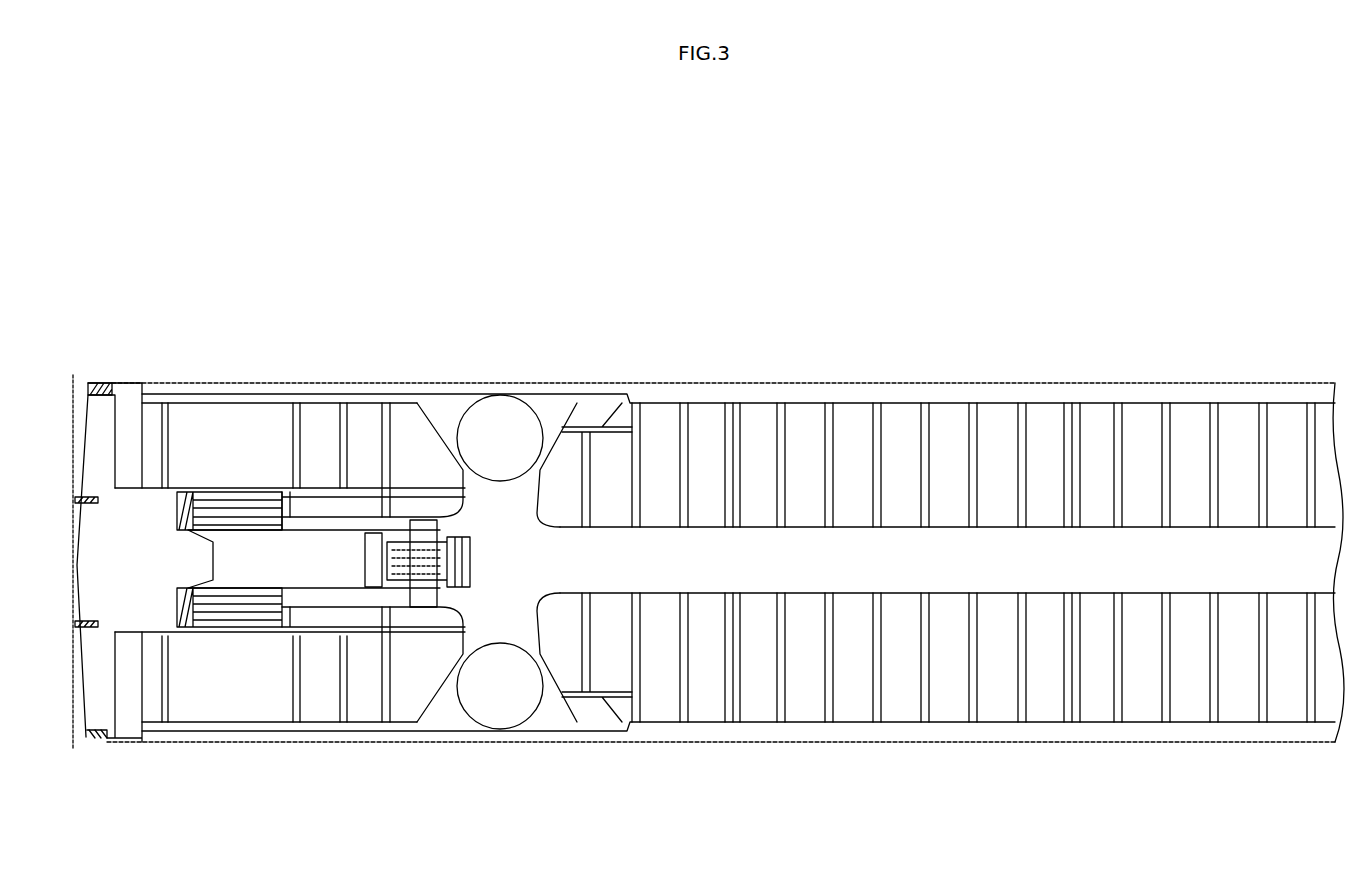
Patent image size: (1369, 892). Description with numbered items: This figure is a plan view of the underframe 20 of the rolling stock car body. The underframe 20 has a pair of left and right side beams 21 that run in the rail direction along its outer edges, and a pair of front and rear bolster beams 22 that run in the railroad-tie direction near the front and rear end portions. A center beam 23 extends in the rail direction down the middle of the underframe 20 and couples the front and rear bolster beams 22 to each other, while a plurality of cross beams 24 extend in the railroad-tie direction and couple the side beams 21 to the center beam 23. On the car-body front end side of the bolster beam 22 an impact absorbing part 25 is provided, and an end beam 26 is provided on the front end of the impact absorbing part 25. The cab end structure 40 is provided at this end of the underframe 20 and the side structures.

The underframe 20 is at (719, 284).
The side beam 21 is at (966, 381).
The bolster beam 22 is at (448, 712).
The center beam 23 is at (890, 535).
The cross beam 24 is at (783, 700).
The impact absorbing part 25 is at (261, 632).
The end beam 26 is at (130, 745).
The cab end structure 40 is at (94, 377).